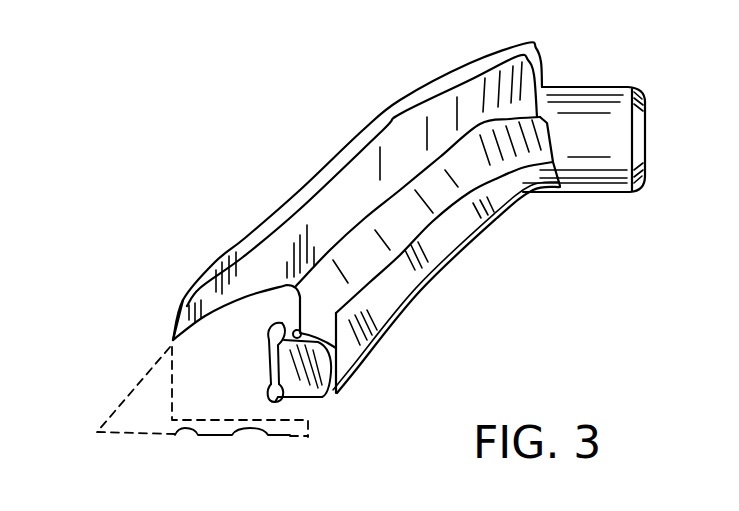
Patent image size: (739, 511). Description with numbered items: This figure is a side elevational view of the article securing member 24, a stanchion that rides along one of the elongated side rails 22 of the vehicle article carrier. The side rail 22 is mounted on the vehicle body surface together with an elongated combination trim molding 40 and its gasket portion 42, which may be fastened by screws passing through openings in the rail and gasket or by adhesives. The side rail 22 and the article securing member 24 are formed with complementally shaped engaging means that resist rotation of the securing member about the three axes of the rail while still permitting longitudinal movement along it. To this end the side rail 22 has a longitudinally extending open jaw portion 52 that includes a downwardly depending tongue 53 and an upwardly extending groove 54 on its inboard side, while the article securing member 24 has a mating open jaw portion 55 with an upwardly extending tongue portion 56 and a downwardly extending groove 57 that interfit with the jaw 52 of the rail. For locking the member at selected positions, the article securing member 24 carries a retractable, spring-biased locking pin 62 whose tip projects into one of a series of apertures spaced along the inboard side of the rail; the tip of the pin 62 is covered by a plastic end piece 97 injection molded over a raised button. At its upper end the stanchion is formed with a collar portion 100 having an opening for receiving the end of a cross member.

The article securing member 24 is at (335, 152).
The collar portion 100 is at (618, 100).
The side rail 22 is at (173, 337).
The trim molding 40 is at (143, 372).
The gasket portion 42 is at (245, 425).
The groove 54 is at (272, 326).
The tongue portion 56 is at (270, 350).
The tongue 53 is at (282, 370).
The groove 57 is at (308, 392).
The locking pin 62 is at (282, 402).
The plastic end piece 97 is at (273, 400).
The open jaw portion 55 is at (332, 386).
The open jaw portion 52 is at (352, 364).